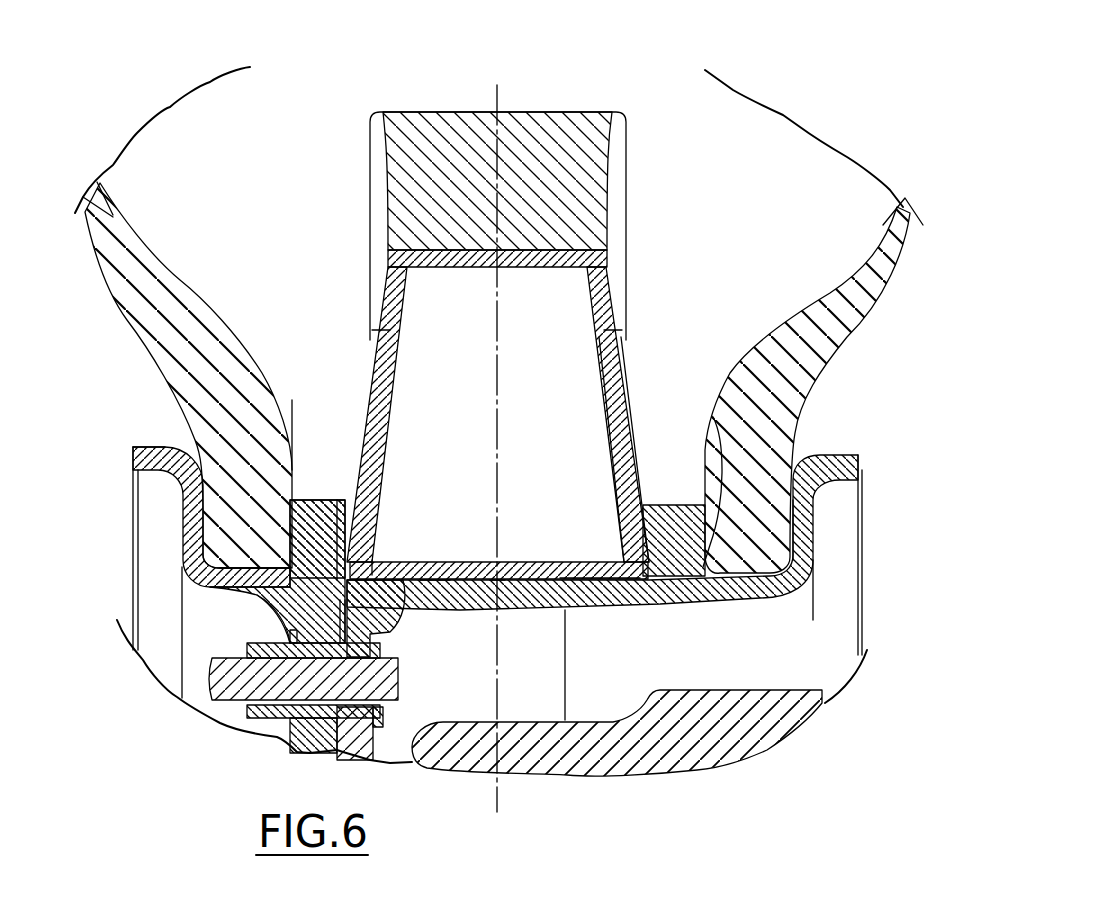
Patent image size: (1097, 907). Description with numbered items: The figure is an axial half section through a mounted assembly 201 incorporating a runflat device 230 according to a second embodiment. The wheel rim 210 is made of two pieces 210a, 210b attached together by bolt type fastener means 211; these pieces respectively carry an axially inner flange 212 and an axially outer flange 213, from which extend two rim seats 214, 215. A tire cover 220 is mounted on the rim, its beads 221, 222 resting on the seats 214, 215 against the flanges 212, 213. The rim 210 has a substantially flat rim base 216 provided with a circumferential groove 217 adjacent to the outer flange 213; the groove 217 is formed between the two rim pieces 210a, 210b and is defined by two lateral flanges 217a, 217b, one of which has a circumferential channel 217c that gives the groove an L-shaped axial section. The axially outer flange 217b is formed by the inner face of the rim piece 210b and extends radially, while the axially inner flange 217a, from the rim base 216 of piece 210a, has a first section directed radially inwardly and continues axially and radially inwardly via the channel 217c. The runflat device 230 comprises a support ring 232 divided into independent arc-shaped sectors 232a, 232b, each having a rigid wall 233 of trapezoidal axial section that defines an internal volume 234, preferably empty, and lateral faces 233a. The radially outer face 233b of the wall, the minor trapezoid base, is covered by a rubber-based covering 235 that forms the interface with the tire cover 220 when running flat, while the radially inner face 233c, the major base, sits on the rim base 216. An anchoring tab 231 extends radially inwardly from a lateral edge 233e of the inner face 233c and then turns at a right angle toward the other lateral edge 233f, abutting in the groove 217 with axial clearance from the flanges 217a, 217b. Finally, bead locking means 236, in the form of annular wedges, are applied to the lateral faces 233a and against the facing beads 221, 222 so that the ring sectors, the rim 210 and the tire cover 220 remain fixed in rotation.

The mounted assembly 201 is at (832, 92).
The wheel rim 210 is at (652, 612).
The rim piece 210a is at (745, 600).
The rim piece 210b is at (178, 532).
The bolt type fastener means 211 is at (400, 647).
The axially inner flange 212 is at (840, 452).
The axially outer flange 213 is at (148, 447).
The rim seat 214 is at (800, 565).
The rim seat 215 is at (190, 572).
The rim base 216 is at (515, 580).
The circumferential groove 217 is at (333, 573).
The axially inner flange of the groove 217a is at (430, 580).
The axially outer flange of the groove 217b is at (278, 600).
The circumferential channel 217c is at (497, 560).
The tire cover 220 is at (830, 285).
The bead 221 is at (713, 417).
The bead 222 is at (295, 470).
The runflat device 230 is at (526, 379).
The anchoring tab 231 is at (404, 622).
The support ring 232 is at (630, 252).
The sector 232a is at (630, 348).
The sector 232b is at (611, 449).
The rigid wall 233 is at (368, 385).
The lateral faces 233a is at (372, 340).
The radially outer face 233b is at (523, 262).
The radially inner face 233c is at (583, 560).
The lateral edge 233e is at (358, 560).
The lateral edge 233f is at (640, 600).
The internal volume 234 is at (555, 396).
The rubber-based covering 235 is at (400, 178).
The means for locking the beads 236 is at (300, 540).